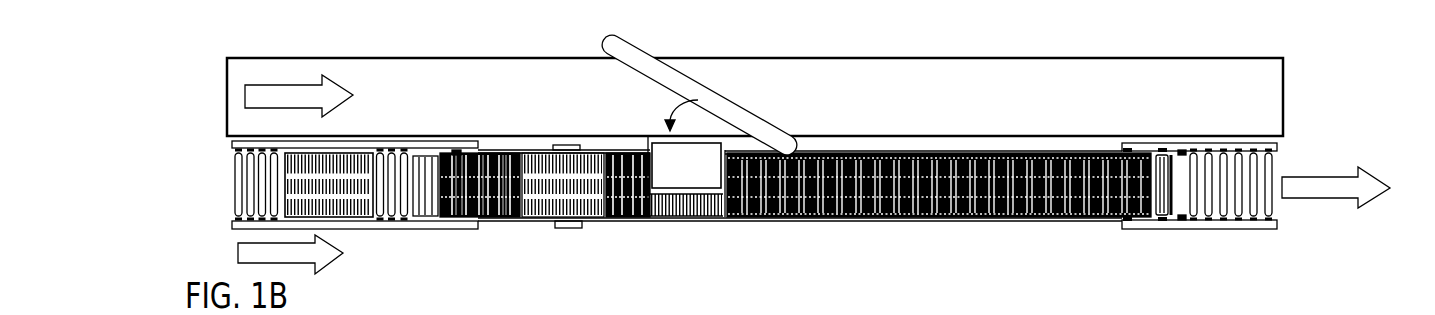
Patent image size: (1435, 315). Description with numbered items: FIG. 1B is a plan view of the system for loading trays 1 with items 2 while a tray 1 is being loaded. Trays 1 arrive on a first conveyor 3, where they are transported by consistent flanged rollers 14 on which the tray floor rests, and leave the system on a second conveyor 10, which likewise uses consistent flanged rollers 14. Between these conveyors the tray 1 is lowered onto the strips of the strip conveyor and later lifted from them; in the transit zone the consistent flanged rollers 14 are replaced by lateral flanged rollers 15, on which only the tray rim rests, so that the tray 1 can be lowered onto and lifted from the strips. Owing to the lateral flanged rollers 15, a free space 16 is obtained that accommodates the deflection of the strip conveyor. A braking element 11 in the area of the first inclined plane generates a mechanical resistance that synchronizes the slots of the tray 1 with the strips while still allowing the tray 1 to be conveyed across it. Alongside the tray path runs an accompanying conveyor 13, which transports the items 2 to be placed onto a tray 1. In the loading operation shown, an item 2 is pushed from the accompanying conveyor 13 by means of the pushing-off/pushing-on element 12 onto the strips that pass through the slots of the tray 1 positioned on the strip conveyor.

The tray 1 is at (338, 195).
The item 2 is at (693, 180).
The first conveyor 3 is at (398, 223).
The second conveyor 10 is at (1208, 225).
The braking element 11 is at (563, 227).
The pushing-off/pushing-on element 12 is at (717, 88).
The accompanying conveyor 13 is at (1147, 75).
The consistent flanged rollers 14 is at (403, 200).
The lateral flanged rollers 15 is at (457, 150).
The free space 16 is at (1180, 193).